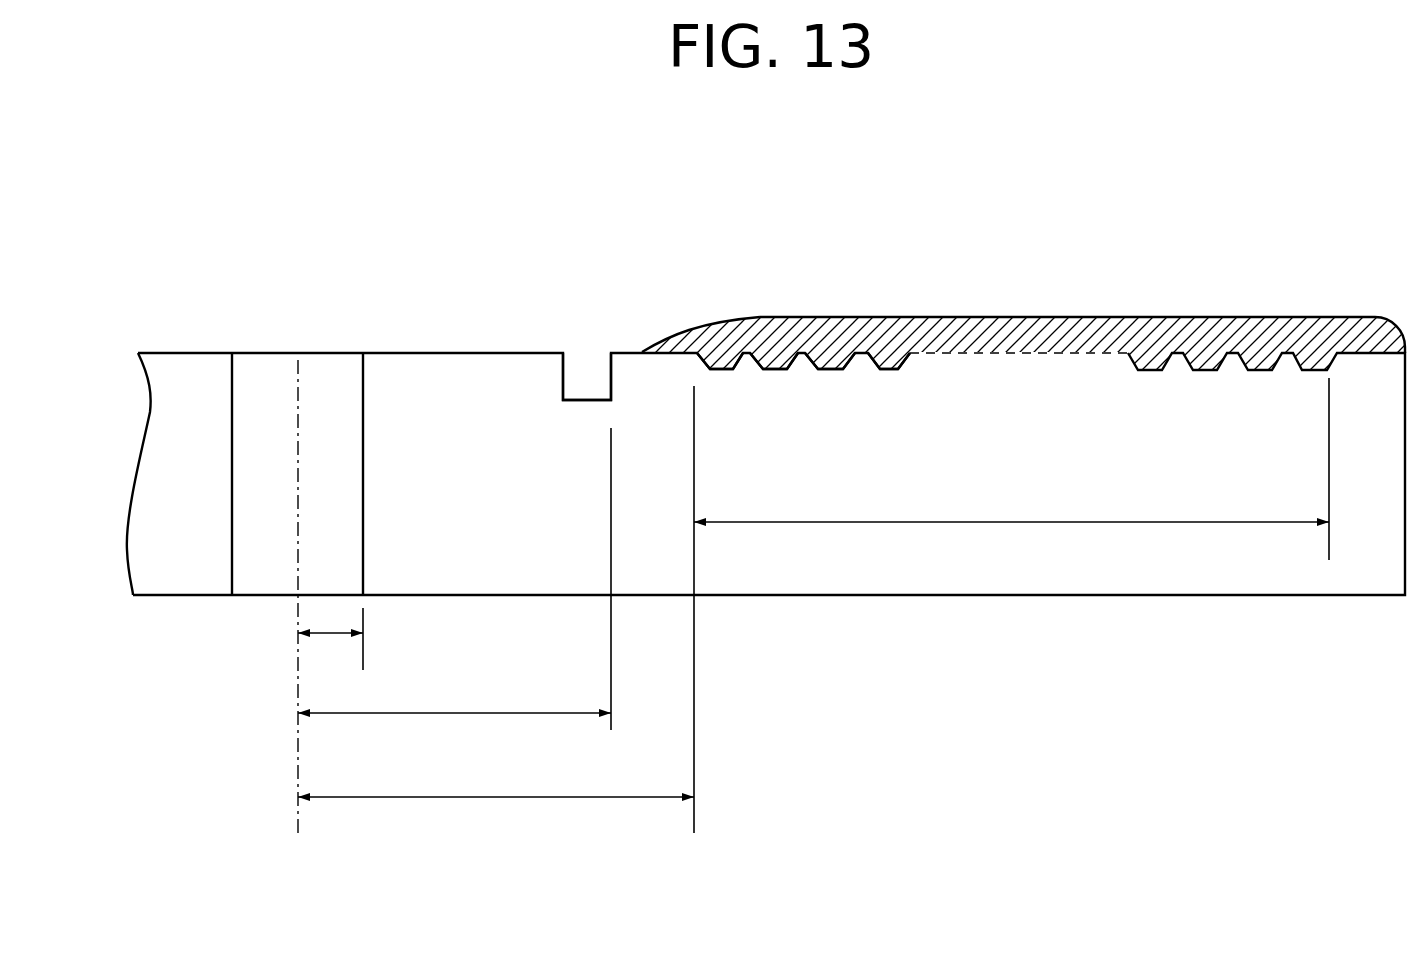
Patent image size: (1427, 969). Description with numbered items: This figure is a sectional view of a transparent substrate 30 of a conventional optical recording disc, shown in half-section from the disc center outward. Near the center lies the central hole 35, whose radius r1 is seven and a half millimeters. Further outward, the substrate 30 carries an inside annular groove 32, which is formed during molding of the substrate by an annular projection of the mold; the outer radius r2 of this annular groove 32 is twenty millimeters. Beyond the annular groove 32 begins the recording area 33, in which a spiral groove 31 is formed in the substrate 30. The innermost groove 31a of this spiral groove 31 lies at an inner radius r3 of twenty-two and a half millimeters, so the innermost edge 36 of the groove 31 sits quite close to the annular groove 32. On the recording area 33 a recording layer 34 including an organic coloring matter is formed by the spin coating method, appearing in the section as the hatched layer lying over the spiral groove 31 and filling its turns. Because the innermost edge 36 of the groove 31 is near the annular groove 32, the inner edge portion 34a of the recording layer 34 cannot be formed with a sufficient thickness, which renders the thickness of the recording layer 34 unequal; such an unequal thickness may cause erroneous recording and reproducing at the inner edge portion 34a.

The substrate 30 is at (918, 595).
The spiral groove 31 is at (893, 370).
The innermost groove 31a is at (723, 372).
The annular groove 32 is at (580, 402).
The recording area 33 is at (1082, 522).
The recording layer 34 is at (1214, 325).
The inner edge portion 34a is at (702, 328).
The central hole 35 is at (259, 388).
The innermost edge 36 is at (694, 466).
The radius of central hole r1 is at (330, 633).
The outer radius of annular groove r2 is at (443, 713).
The inner radius of innermost groove r3 is at (498, 797).